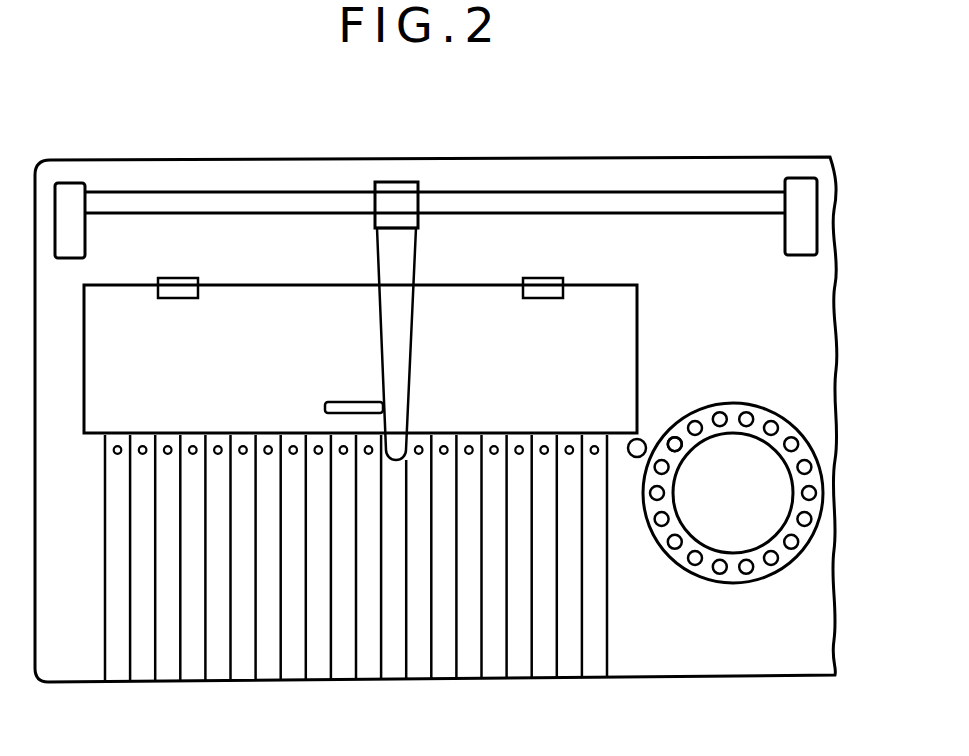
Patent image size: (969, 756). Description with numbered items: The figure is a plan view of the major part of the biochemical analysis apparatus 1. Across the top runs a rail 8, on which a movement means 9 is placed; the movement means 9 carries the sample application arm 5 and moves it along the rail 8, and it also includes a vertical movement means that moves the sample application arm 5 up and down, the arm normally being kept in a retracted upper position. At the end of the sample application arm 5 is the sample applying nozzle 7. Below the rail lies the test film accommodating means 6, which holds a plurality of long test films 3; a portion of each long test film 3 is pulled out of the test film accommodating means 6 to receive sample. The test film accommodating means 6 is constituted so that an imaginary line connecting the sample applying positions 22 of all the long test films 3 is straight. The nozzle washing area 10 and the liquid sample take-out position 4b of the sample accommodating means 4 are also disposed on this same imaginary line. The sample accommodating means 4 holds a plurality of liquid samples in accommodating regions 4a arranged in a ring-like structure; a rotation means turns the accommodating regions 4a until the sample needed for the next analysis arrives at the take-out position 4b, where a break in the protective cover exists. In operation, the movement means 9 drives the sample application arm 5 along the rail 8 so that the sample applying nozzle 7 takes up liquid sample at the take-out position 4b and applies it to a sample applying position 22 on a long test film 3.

The biochemical analysis apparatus 1 is at (680, 137).
The long test film 3 is at (395, 147).
The sample accommodating means 4 is at (797, 429).
The accommodating regions 4a is at (812, 491).
The liquid sample take-out position 4b is at (677, 440).
The sample application arm 5 is at (382, 356).
The test film accommodating means 6 is at (142, 400).
The sample applying nozzle 7 is at (390, 447).
The rail 8 is at (500, 195).
The movement means 9 is at (392, 192).
The nozzle washing area 10 is at (628, 440).
The sample applying positions 22 is at (519, 445).